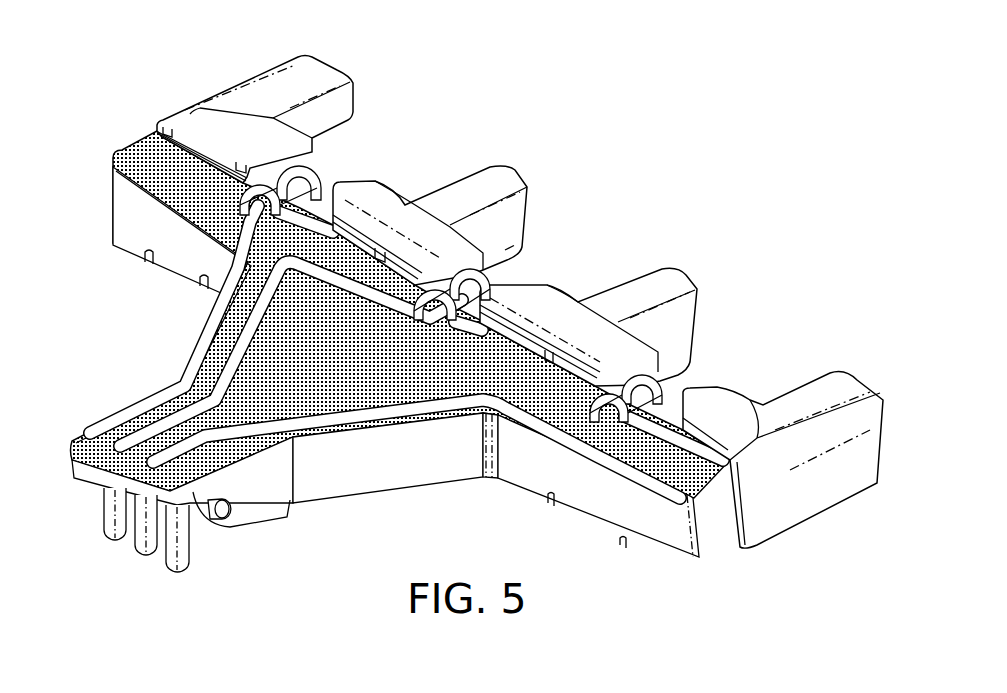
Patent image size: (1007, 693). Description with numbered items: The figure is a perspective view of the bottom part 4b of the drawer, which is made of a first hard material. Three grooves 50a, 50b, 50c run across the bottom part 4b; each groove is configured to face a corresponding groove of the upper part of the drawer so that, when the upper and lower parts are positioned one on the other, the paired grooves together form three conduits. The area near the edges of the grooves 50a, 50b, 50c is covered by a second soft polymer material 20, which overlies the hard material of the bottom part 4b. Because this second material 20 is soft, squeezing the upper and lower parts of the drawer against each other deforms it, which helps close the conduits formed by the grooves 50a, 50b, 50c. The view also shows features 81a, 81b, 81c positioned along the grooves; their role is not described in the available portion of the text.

The bottom part 4b is at (624, 224).
The second soft polymer material 20 is at (627, 467).
The groove 50a is at (167, 404).
The groove 50b is at (221, 400).
The groove 50c is at (222, 448).
The first clip 81a is at (320, 173).
The second clip 81b is at (497, 277).
The third clip 81c is at (660, 387).